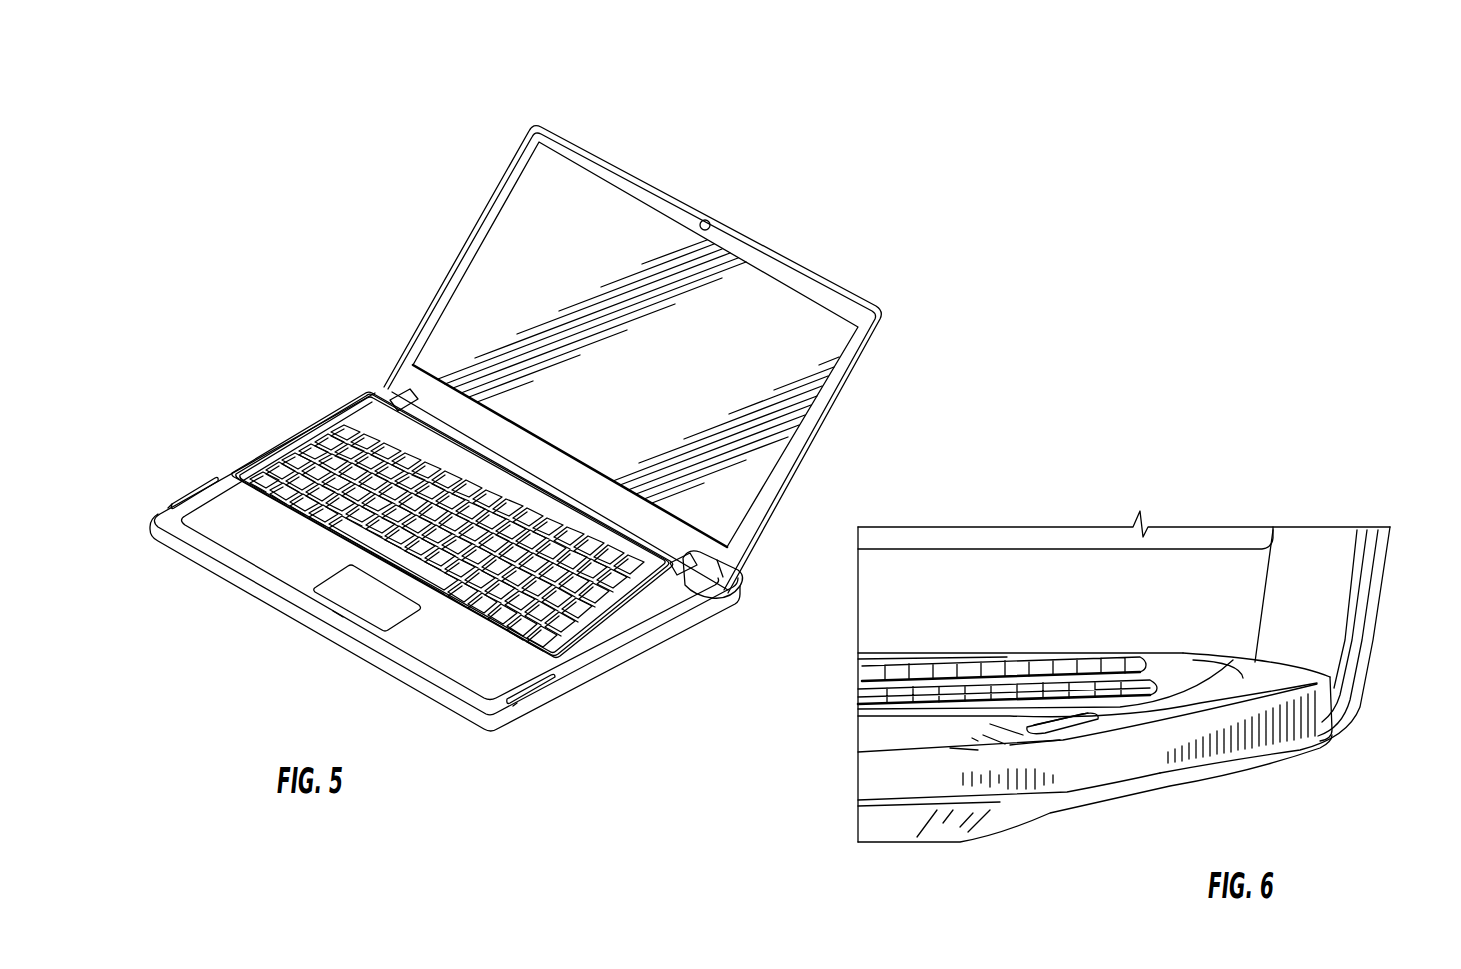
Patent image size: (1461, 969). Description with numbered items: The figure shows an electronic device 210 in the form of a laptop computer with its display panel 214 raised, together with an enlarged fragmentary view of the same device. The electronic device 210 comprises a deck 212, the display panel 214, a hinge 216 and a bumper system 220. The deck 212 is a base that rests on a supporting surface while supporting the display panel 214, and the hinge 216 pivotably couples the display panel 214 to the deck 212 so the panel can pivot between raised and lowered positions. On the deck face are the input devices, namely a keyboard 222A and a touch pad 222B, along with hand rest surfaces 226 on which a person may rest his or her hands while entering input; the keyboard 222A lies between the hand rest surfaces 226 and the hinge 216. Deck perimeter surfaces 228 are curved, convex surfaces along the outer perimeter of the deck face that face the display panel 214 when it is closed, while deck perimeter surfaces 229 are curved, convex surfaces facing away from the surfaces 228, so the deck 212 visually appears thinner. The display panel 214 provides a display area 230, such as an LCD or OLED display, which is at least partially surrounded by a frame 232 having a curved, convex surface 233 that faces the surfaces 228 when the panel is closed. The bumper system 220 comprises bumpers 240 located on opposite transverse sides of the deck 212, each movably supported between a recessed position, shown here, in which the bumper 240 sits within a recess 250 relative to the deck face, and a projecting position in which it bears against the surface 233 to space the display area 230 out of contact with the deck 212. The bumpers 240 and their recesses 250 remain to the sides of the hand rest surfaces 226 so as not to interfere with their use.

In FIG. 5, the electronic device 210 is at (337, 297).
In FIG. 6, the electronic device 210 is at (965, 510).
In FIG. 6, the deck 212 is at (960, 851).
In FIG. 5, the display panel 214 is at (823, 272).
In FIG. 6, the display panel 214 is at (1378, 628).
In FIG. 5, the hinge 216 is at (703, 567).
In FIG. 5, the bumper system 220 is at (211, 470).
In FIG. 5, the input device 222A is at (630, 620).
In FIG. 6, the input device 222A is at (915, 673).
In FIG. 5, the input device 222B is at (383, 622).
In FIG. 5, the hand rest surfaces 226 is at (287, 545).
In FIG. 6, the hand rest surfaces 226 is at (903, 710).
In FIG. 5, the deck perimeter surfaces 228 is at (296, 435).
In FIG. 6, the deck perimeter surfaces 228 is at (1175, 706).
In FIG. 6, the deck perimeter surfaces 229 is at (1167, 783).
In FIG. 5, the display area 230 is at (610, 220).
In FIG. 6, the display area 230 is at (1190, 538).
In FIG. 5, the frame 232 is at (843, 374).
In FIG. 6, the frame 232 is at (1315, 640).
In FIG. 6, the curved, convex surface 233 is at (1318, 555).
In FIG. 5, the bumper 240 is at (186, 486).
In FIG. 6, the bumper 240 is at (1077, 729).
In FIG. 5, the recess 250 is at (173, 498).
In FIG. 6, the recess 250 is at (1062, 732).